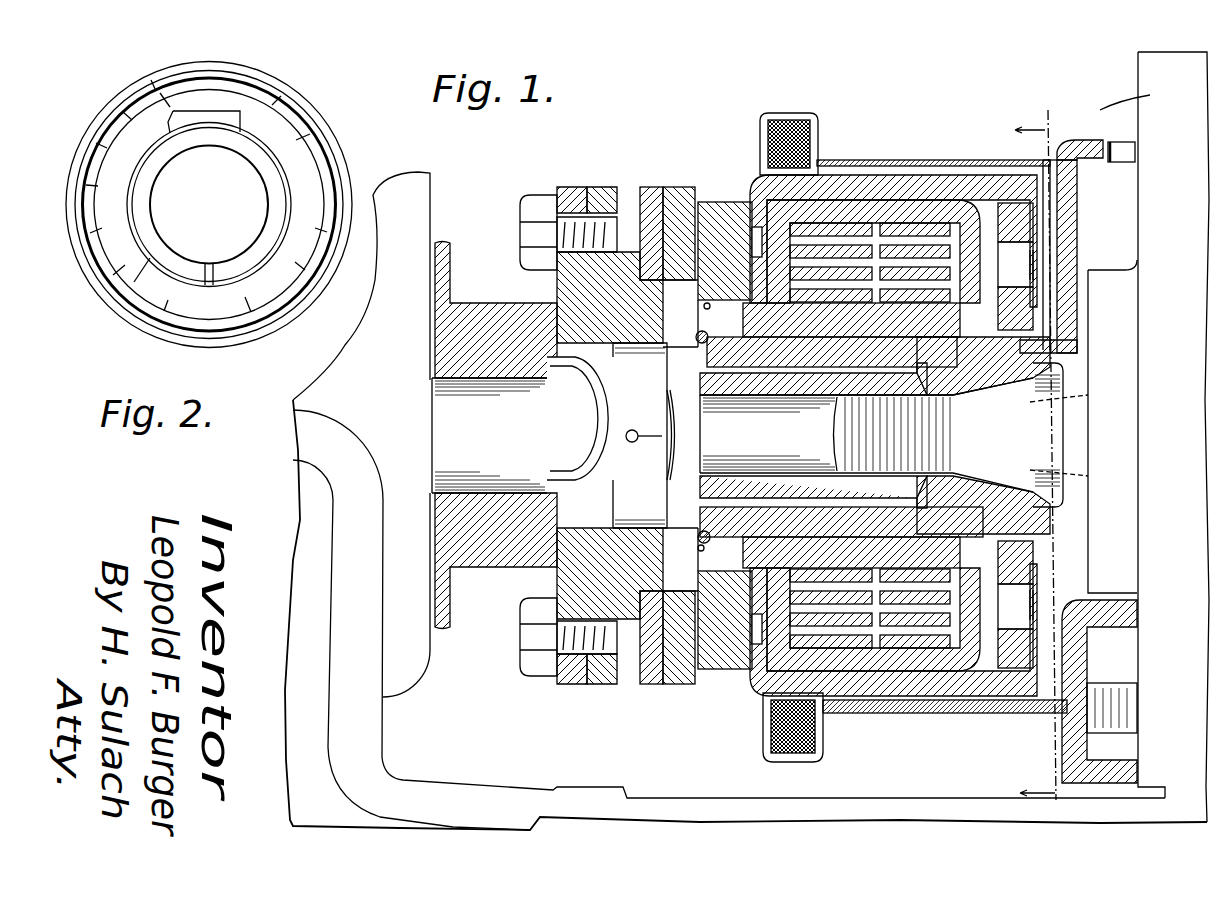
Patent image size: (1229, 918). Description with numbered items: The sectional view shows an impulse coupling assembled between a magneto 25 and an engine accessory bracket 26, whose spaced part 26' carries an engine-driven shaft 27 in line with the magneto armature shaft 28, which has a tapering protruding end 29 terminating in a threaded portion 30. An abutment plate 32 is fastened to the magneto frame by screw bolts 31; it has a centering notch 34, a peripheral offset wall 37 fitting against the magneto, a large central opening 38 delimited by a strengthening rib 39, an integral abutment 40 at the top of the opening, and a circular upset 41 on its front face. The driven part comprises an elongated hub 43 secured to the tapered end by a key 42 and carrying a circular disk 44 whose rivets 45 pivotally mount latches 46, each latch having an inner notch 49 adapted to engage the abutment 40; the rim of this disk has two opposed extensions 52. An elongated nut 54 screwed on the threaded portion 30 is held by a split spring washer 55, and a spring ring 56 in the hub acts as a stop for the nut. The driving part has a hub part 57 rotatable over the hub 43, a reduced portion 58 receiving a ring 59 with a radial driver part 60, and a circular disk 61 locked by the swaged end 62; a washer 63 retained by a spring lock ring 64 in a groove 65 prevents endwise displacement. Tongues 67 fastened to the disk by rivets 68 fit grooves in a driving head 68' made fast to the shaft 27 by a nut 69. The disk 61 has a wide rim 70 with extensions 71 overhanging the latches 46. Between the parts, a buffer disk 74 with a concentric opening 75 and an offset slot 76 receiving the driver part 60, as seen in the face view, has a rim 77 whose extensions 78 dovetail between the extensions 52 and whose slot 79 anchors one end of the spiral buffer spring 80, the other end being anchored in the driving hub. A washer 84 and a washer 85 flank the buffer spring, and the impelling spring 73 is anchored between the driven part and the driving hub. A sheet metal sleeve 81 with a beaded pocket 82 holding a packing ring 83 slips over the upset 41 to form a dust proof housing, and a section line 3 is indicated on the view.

In FIG. 1, the section line 3 is at (1039, 458).
In FIG. 1, the magneto 25 is at (1148, 68).
In FIG. 1, the engine accessory bracket 26 is at (746, 615).
In FIG. 1, the part of accessory bracket 26' is at (357, 286).
In FIG. 2, the part of accessory bracket 26' is at (300, 361).
In FIG. 1, the shaft 27 is at (450, 430).
In FIG. 1, the armature shaft 28 is at (1090, 405).
In FIG. 1, the tapering protruding end 29 is at (1070, 445).
In FIG. 1, the threaded portion 30 is at (840, 436).
In FIG. 1, the screw bolts 31 is at (1100, 700).
In FIG. 1, the abutment plate 32 is at (1075, 640).
In FIG. 1, the centering notch 34 is at (1137, 152).
In FIG. 1, the offset wall 37 is at (1155, 725).
In FIG. 1, the central opening 38 is at (1065, 360).
In FIG. 1, the strengthening rib 39 is at (1115, 600).
In FIG. 1, the abutment 40 is at (1075, 345).
In FIG. 1, the circular upset 41 is at (1020, 713).
In FIG. 1, the key 42 is at (1085, 395).
In FIG. 1, the elongated hub 43 is at (1065, 505).
In FIG. 1, the circular disk 44 is at (1065, 280).
In FIG. 1, the rivets 45 is at (1015, 205).
In FIG. 1, the latch 46 is at (1020, 210).
In FIG. 1, the inner notch 49 is at (1060, 300).
In FIG. 1, the extensions 52 is at (905, 640).
In FIG. 1, the elongated nut 54 is at (682, 430).
In FIG. 1, the spring washer 55 is at (1040, 465).
In FIG. 1, the spring ring 56 is at (698, 538).
In FIG. 1, the hub part 57 is at (698, 550).
In FIG. 2, the hub part 57 is at (268, 190).
In FIG. 1, the reduced portion 58 is at (840, 545).
In FIG. 2, the reduced portion 58 is at (262, 150).
In FIG. 1, the ring 59 is at (800, 660).
In FIG. 2, the ring 59 is at (270, 175).
In FIG. 1, the driver part 60 is at (745, 250).
In FIG. 2, the driver part 60 is at (215, 118).
In FIG. 1, the circular disk 61 is at (752, 210).
In FIG. 1, the swaged end 62 is at (715, 295).
In FIG. 1, the washer 63 is at (700, 280).
In FIG. 1, the spring lock ring 64 is at (720, 300).
In FIG. 1, the groove 65 is at (696, 338).
In FIG. 1, the tongues 67 is at (730, 130).
In FIG. 1, the rivets 68 is at (827, 411).
In FIG. 1, the driving head 68' is at (568, 411).
In FIG. 1, the nut 69 is at (600, 430).
In FIG. 1, the rim 70 is at (910, 160).
In FIG. 1, the extensions 71 is at (1030, 165).
In FIG. 1, the impelling spring 73 is at (930, 640).
In FIG. 1, the buffer disk 74 is at (775, 600).
In FIG. 2, the buffer disk 74 is at (352, 170).
In FIG. 1, the concentric opening 75 is at (780, 580).
In FIG. 2, the concentric opening 75 is at (150, 265).
In FIG. 1, the offset slot 76 is at (760, 240).
In FIG. 2, the offset slot 76 is at (152, 100).
In FIG. 1, the rim 77 is at (860, 305).
In FIG. 2, the rim 77 is at (250, 104).
In FIG. 1, the extensions 78 is at (880, 340).
In FIG. 2, the extensions 78 is at (118, 118).
In FIG. 2, the slot 79 is at (212, 290).
In FIG. 1, the buffer spring 80 is at (860, 713).
In FIG. 1, the sheet metal sleeve 81 is at (960, 713).
In FIG. 1, the annular beaded pocket 82 is at (810, 113).
In FIG. 1, the packing ring 83 is at (790, 762).
In FIG. 1, the washer 84 is at (809, 726).
In FIG. 1, the washer 85 is at (895, 640).